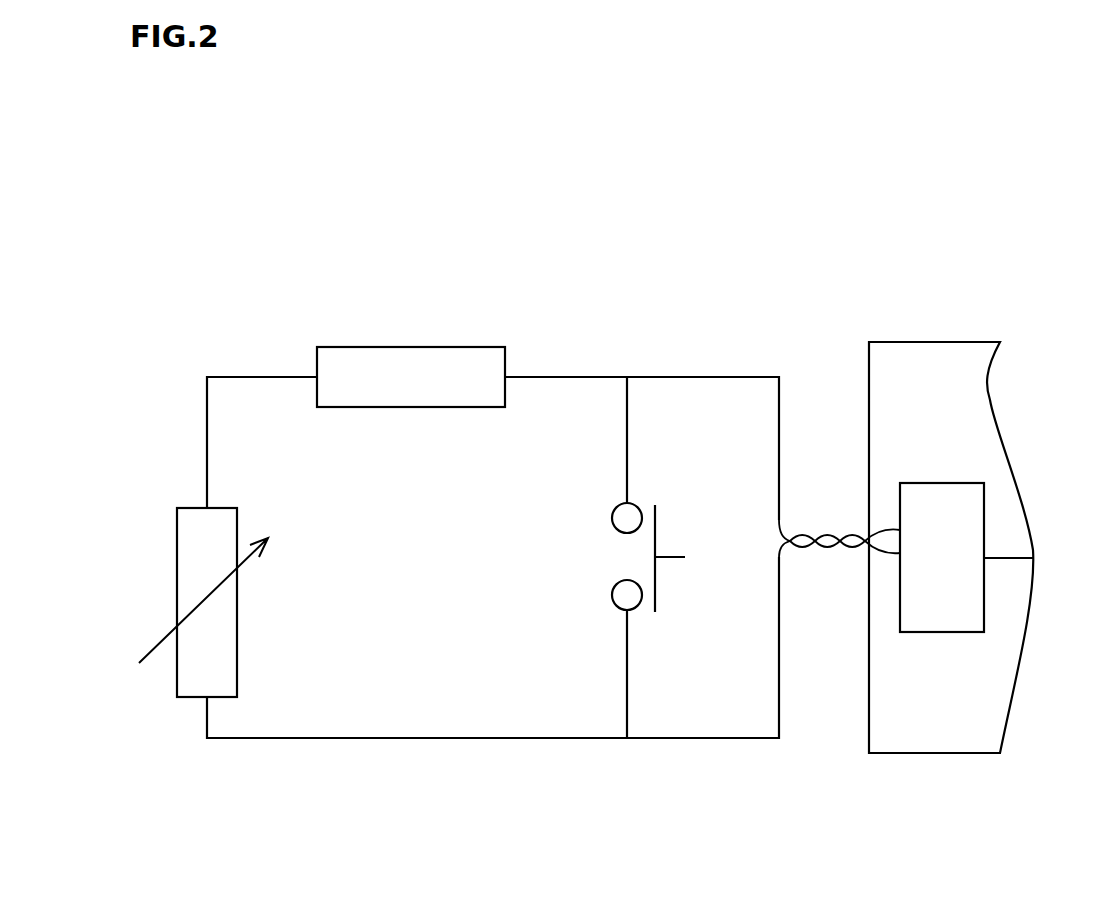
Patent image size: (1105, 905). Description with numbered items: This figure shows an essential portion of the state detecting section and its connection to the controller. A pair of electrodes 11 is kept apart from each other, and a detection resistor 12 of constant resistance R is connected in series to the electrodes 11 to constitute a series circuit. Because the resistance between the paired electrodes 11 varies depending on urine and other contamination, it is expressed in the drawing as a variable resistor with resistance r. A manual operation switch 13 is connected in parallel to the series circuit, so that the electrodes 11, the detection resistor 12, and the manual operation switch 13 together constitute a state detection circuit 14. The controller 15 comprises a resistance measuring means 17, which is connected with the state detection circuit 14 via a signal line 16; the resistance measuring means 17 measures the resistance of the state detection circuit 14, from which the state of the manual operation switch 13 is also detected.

The electrodes 11 is at (177, 566).
The detection resistor 12 is at (406, 347).
The manual operation switch 13 is at (613, 552).
The state detection circuit 14 is at (485, 483).
The controller 15 is at (924, 342).
The signal line 16 is at (823, 545).
The resistance measuring means 17 is at (933, 632).